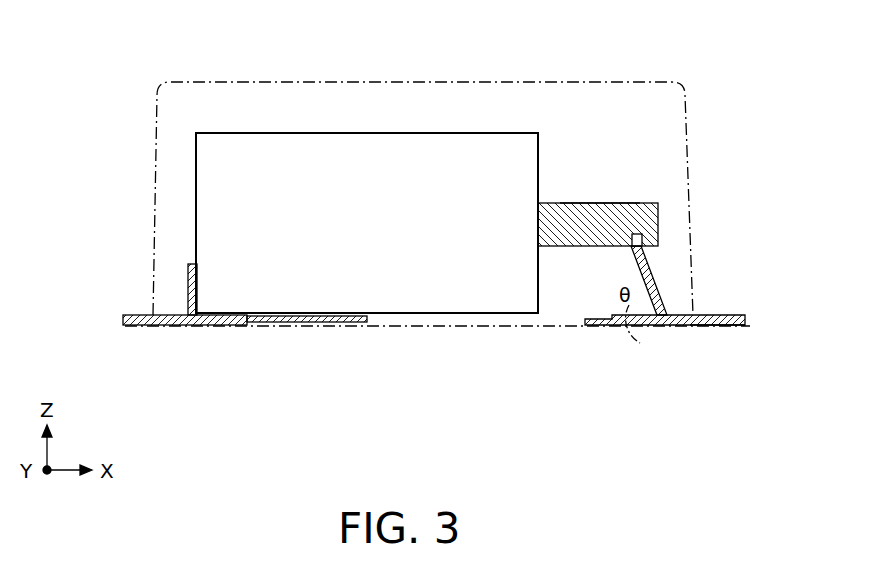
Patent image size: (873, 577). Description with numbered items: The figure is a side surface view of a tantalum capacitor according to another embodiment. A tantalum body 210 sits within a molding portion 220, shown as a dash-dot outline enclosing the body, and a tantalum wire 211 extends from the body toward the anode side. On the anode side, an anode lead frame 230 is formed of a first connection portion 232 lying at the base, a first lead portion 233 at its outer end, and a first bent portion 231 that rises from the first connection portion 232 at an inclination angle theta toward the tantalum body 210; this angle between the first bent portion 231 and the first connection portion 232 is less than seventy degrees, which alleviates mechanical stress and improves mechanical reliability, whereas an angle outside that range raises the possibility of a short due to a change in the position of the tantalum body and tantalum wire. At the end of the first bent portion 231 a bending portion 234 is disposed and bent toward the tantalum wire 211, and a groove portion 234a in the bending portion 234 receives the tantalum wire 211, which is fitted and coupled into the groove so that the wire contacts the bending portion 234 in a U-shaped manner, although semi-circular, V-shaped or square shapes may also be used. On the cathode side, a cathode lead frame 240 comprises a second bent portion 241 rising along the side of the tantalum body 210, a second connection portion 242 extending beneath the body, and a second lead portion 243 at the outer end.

The tantalum body 210 is at (300, 133).
The tantalum wire 211 is at (640, 205).
The molding portion 220 is at (420, 82).
The anode lead frame 230 is at (679, 326).
The first bent portion 231 is at (648, 278).
The first connection portion 232 is at (637, 326).
The first lead portion 233 is at (735, 326).
The bending portion 234 is at (658, 243).
The groove portion 234a is at (642, 240).
The cathode lead frame 240 is at (227, 326).
The second bent portion 241 is at (187, 297).
The second connection portion 242 is at (242, 326).
The second lead portion 243 is at (160, 326).